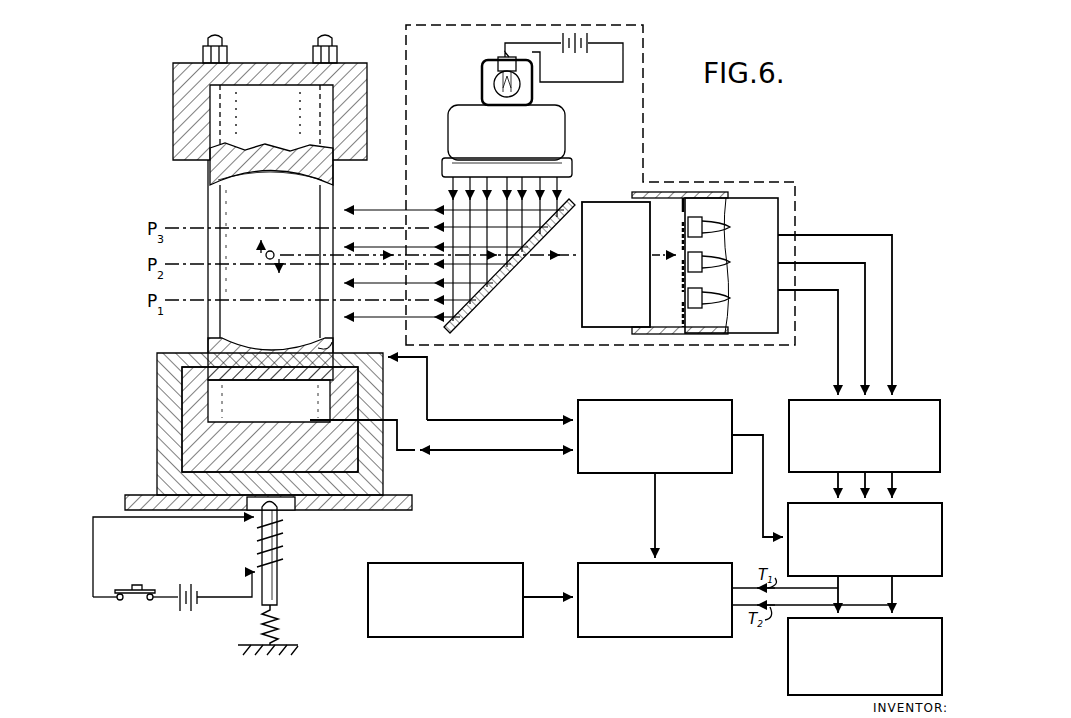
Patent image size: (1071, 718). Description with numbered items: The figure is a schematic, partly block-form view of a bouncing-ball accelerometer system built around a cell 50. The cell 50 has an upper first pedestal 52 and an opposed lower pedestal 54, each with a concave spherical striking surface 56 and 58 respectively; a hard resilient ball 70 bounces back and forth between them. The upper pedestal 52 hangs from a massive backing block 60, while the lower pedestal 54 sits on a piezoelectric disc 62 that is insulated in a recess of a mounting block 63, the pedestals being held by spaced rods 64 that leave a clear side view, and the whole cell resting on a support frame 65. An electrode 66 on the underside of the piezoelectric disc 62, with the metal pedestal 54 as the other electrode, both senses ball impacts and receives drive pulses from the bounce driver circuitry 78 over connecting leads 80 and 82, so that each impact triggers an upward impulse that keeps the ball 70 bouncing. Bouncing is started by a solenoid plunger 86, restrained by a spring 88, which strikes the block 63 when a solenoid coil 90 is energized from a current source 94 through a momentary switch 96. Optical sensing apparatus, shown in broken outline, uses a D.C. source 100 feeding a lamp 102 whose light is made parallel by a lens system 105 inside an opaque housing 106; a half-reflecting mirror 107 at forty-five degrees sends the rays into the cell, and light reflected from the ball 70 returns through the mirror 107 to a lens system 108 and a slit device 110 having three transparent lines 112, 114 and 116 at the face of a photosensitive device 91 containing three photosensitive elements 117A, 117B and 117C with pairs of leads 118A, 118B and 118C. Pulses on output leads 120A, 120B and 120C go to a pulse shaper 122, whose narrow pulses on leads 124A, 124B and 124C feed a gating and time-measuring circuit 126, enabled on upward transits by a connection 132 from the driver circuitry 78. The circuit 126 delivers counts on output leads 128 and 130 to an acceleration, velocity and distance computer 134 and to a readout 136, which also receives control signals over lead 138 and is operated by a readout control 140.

The cell 50 is at (206, 197).
The first pedestal 52 is at (270, 115).
The lower pedestal 54 is at (236, 344).
The striking surface 56 is at (328, 182).
The striking surface 58 is at (326, 340).
The backing block 60 is at (176, 103).
The piezoelectric disc 62 is at (270, 419).
The mounting block 63 is at (176, 400).
The rods 64 is at (207, 42).
The support frame 65 is at (134, 495).
The electrode 66 is at (300, 419).
The ball 70 is at (274, 251).
The bounce driver circuitry 78 is at (712, 401).
The connecting lead 80 is at (468, 418).
The connecting lead 82 is at (470, 453).
The solenoid plunger 86 is at (278, 595).
The spring 88 is at (280, 632).
The solenoid coil 90 is at (283, 543).
The photosensitive device 91 is at (731, 265).
The current source 94 is at (190, 613).
The switch 96 is at (137, 584).
The D.C. source 100 is at (577, 48).
The lamp 102 is at (493, 76).
The lens system 105 is at (570, 136).
The housing 106 is at (462, 110).
The half-reflecting mirror 107 is at (478, 300).
The lens system 108 is at (616, 264).
The slit device 110 is at (672, 194).
The transparent line 112 is at (682, 216).
The transparent line 114 is at (682, 256).
The transparent line 116 is at (682, 298).
The photosensitive element 117A is at (712, 236).
The photosensitive element 117B is at (712, 271).
The photosensitive element 117C is at (712, 307).
The pair of conductive leads 118A is at (728, 227).
The pair of conductive leads 118B is at (728, 262).
The pair of conductive leads 118C is at (728, 298).
The output lead 120A is at (836, 372).
The output lead 120B is at (866, 322).
The output lead 120C is at (893, 364).
The pulse shaper 122 is at (905, 404).
The output lead 124A is at (836, 489).
The output lead 124B is at (868, 487).
The output lead 124C is at (895, 494).
The gating and time-measuring circuit 126 is at (921, 574).
The output lead 128 is at (836, 599).
The output lead 130 is at (891, 600).
The connection 132 is at (763, 523).
The acceleration, velocity and distance computer 134 is at (788, 660).
The T1, T2 readout 136 is at (598, 562).
The lead 138 is at (653, 500).
The readout control 140 is at (502, 562).